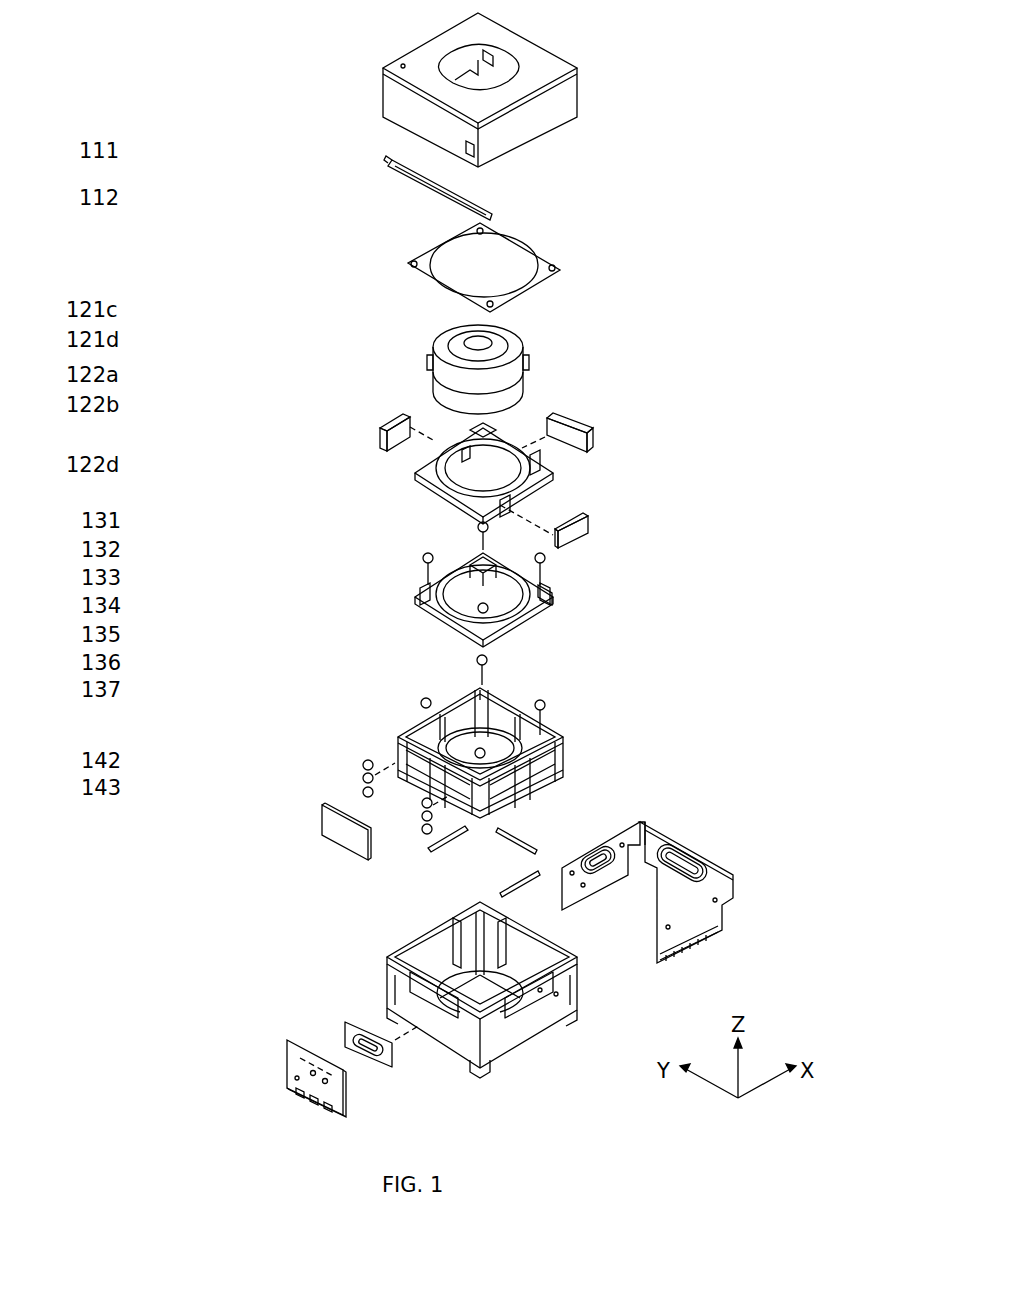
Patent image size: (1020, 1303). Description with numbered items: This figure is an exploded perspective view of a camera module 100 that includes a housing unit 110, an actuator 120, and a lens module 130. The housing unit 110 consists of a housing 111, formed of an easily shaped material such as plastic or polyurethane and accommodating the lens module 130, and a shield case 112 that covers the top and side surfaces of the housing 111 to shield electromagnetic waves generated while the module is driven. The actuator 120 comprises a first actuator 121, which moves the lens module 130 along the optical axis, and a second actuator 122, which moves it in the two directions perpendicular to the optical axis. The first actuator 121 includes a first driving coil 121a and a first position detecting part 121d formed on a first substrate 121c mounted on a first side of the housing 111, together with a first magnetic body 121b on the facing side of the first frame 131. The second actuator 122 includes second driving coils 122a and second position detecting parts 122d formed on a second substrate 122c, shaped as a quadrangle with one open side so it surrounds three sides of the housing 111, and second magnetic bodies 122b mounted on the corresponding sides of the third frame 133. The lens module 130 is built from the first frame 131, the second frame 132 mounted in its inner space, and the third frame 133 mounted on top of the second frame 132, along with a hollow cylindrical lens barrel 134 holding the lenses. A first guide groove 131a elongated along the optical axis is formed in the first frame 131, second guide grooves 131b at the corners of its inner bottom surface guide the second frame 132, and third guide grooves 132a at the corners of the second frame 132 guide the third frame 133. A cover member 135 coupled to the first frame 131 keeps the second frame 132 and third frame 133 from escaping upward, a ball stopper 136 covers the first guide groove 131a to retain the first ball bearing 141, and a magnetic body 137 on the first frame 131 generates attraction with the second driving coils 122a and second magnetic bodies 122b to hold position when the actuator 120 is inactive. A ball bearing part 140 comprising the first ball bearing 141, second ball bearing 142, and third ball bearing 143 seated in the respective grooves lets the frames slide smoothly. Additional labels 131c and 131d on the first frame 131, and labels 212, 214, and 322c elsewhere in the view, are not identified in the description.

The camera module 100 is at (769, 267).
The housing unit 110 is at (125, 140).
The housing 111 is at (505, 1032).
The shield case 112 is at (398, 100).
The actuator 120 is at (188, 282).
The first actuator 121 is at (125, 240).
The first driving coil 121a is at (92, 248).
The first magnetic body 121b is at (92, 280).
The first substrate 121c is at (295, 1062).
The first position detecting part 121d is at (347, 1034).
The second actuator 122 is at (125, 365).
The second driving coil 122a is at (603, 848).
The second magnetic body 122b is at (587, 532).
The second substrate 122c is at (92, 435).
The second position detecting part 122d is at (613, 872).
The lens module 130 is at (125, 510).
The first frame 131 is at (563, 745).
The first guide groove 131a is at (472, 818).
The second guide groove 131b is at (490, 690).
The carrier side wall 131c is at (430, 800).
The carrier side wall 131d is at (398, 748).
The second frame 132 is at (560, 600).
The third guide groove 132a is at (553, 585).
The third frame 133 is at (437, 492).
The lens barrel 134 is at (433, 390).
The cover member 135 is at (537, 258).
The ball stopper 136 is at (390, 164).
The magnetic body 137 is at (428, 852).
The ball bearing part 140 is at (125, 730).
The first ball bearing 141 is at (101, 740).
The second ball bearing 142 is at (423, 700).
The third ball bearing 143 is at (423, 556).
The coil 212 is at (370, 1062).
The yoke plate 214 is at (322, 822).
The flexible substrate 322c is at (573, 895).